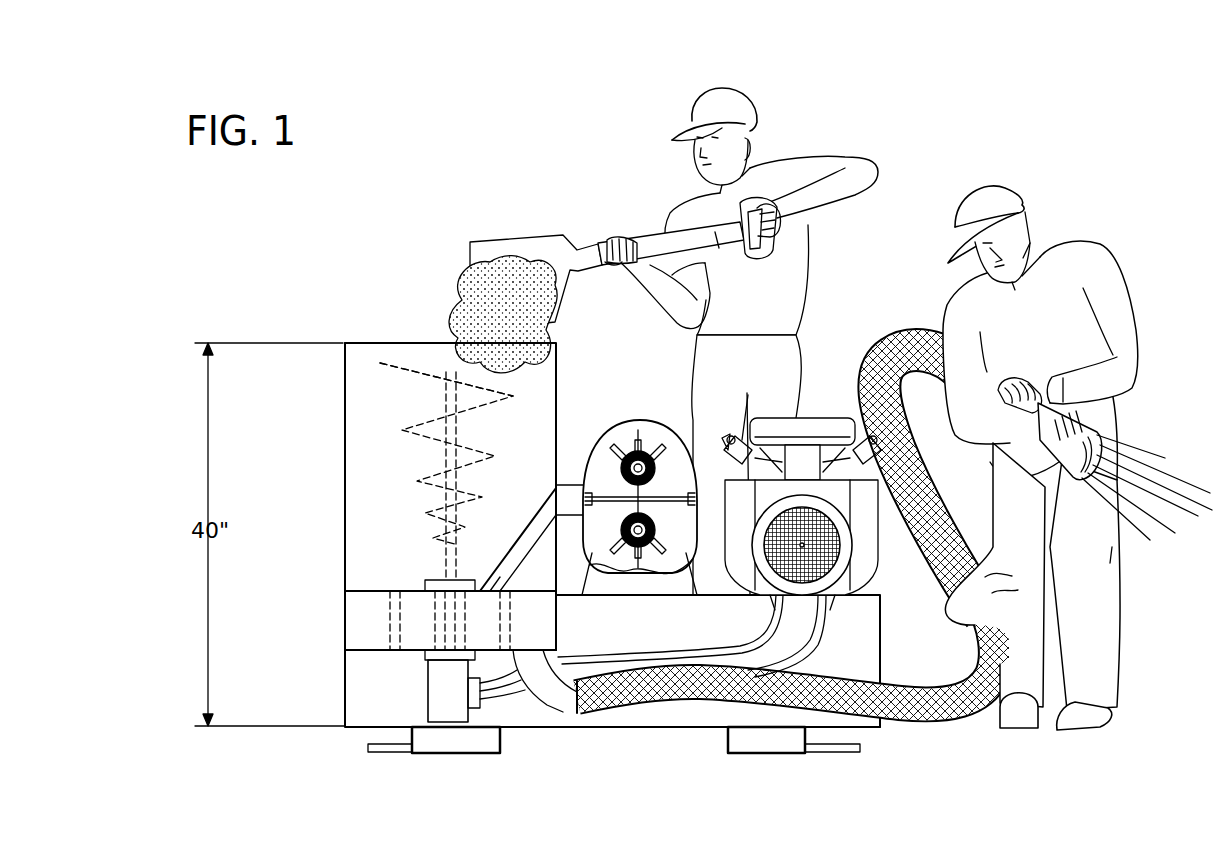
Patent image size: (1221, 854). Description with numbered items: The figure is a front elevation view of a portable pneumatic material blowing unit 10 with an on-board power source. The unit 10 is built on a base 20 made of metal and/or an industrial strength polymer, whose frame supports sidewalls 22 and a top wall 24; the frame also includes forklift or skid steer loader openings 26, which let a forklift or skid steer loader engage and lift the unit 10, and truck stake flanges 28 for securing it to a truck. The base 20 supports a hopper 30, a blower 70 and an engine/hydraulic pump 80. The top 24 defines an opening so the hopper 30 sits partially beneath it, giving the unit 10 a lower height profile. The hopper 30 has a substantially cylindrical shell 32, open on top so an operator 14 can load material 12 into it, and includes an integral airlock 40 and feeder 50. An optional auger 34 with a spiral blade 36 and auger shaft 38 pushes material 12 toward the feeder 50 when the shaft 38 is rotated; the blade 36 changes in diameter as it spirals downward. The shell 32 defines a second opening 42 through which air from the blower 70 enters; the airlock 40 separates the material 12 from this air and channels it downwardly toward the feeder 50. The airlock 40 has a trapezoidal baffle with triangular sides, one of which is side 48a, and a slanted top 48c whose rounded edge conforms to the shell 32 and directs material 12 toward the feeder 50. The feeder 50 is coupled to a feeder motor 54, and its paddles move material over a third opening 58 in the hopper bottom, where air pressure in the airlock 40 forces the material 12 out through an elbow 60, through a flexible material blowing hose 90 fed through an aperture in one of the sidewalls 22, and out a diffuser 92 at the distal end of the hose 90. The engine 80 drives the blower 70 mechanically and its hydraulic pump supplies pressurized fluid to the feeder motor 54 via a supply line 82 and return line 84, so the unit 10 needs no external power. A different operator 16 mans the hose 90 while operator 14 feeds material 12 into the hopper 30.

The pneumatic blowing unit 10 is at (556, 108).
The material 12 is at (465, 302).
The operator 14 is at (733, 88).
The operator 16 is at (993, 185).
The base 20 is at (340, 735).
The sidewalls 22 is at (345, 650).
The top wall 24 is at (735, 582).
The forklift or skid steer loader openings 26 is at (500, 740).
The truck stake flanges 28 is at (395, 752).
The hopper 30 is at (341, 338).
The shell 32 is at (343, 428).
The auger 34 is at (410, 447).
The spiral blade 36 is at (420, 366).
The auger shaft 38 is at (445, 400).
The airlock 40 is at (531, 510).
The second opening 42 is at (558, 520).
The triangular shaped side 48a is at (546, 577).
The baffle top 48c is at (495, 560).
The feeder 50 is at (404, 573).
The feeder motor 54 is at (440, 685).
The third opening 58 is at (565, 640).
The elbow 60 is at (552, 692).
The blower 70 is at (636, 410).
The engine/hydraulic pump 80 is at (885, 556).
The supply line 82 is at (755, 630).
The return line 84 is at (790, 657).
The material blowing hose 90 is at (900, 710).
The diffuser 92 is at (992, 458).